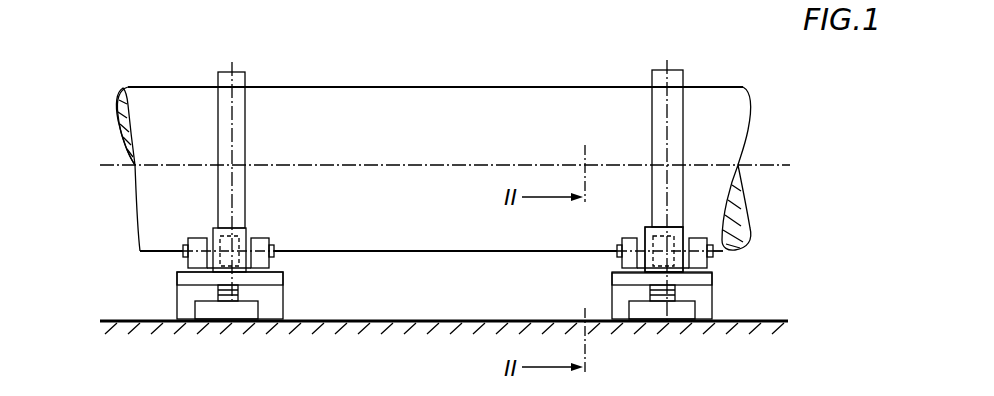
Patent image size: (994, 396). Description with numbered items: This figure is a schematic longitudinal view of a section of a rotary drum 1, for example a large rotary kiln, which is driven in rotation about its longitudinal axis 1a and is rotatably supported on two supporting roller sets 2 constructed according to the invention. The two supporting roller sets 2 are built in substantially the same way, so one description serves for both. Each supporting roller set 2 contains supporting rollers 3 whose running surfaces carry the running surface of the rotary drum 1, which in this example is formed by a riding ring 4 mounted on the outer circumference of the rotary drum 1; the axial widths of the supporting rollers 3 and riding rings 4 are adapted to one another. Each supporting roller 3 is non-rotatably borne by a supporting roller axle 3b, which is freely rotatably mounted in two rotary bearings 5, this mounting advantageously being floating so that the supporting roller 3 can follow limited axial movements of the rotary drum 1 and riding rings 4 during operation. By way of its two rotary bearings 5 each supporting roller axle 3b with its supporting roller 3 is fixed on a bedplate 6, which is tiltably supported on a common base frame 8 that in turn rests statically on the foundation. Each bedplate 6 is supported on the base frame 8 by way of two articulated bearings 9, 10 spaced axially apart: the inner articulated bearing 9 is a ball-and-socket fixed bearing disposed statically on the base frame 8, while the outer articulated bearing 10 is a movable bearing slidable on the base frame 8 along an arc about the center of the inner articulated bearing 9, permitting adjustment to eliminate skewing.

The rotary drum 1 is at (464, 88).
The longitudinal axis 1a is at (372, 165).
The supporting roller set 2 is at (168, 285).
The supporting roller 3 is at (235, 228).
The supporting roller axle 3b is at (645, 232).
The riding ring 4 is at (236, 86).
The rotary bearing 5 is at (198, 238).
The bedplate 6 is at (283, 278).
The base frame 8 is at (250, 306).
The articulated bearing 9 is at (434, 322).
The articulated bearing 10 is at (213, 290).